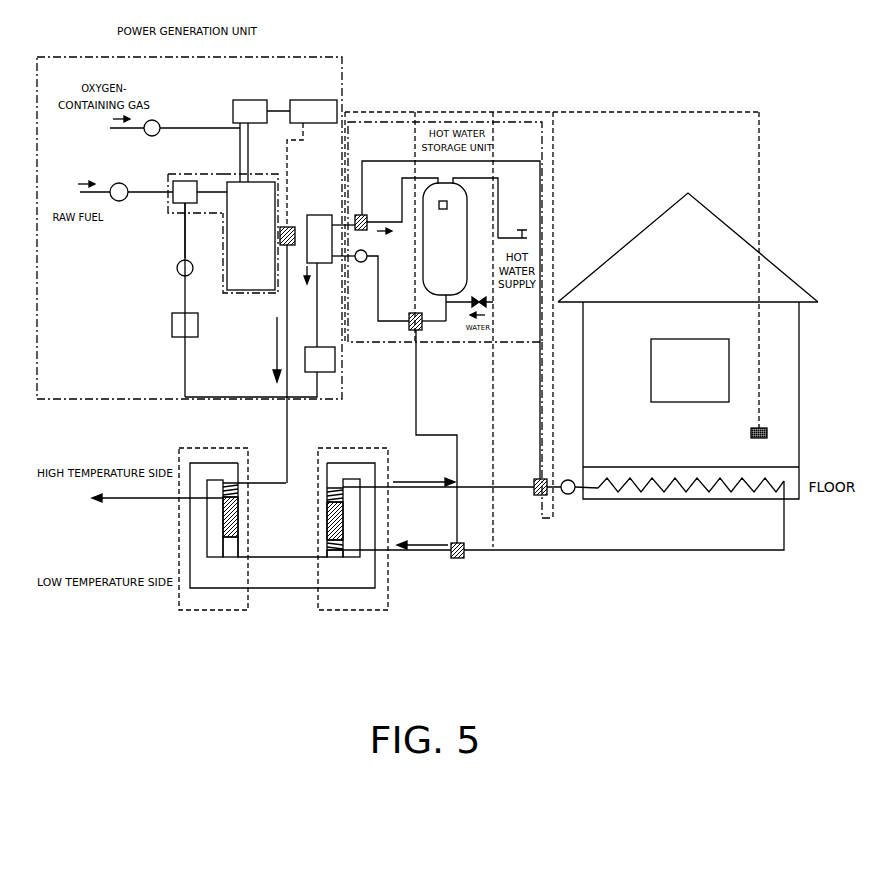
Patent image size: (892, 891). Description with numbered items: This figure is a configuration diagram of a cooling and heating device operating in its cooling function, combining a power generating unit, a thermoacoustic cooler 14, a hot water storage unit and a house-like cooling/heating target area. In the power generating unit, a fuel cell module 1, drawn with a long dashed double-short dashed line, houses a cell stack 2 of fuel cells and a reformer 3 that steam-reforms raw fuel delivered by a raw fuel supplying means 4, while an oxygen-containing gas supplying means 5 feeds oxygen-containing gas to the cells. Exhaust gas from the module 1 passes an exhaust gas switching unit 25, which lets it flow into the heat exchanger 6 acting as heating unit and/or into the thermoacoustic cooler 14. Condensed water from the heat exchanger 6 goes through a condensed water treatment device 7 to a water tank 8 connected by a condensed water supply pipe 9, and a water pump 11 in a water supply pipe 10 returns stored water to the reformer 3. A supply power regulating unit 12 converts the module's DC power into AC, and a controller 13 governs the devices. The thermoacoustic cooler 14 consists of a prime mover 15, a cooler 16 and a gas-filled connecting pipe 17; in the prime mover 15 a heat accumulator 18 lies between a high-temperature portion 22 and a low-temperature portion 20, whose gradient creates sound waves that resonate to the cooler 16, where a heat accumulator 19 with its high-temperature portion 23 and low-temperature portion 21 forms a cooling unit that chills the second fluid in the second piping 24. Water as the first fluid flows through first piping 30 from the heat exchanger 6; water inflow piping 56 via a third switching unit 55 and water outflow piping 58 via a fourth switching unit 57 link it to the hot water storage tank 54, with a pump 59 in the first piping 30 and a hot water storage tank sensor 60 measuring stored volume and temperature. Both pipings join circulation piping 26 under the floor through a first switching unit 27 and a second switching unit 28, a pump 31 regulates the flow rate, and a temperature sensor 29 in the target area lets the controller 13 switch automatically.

The fuel cell module 1 is at (226, 293).
The cell stack 2 is at (248, 282).
The reformer 3 is at (192, 196).
The raw fuel supplying means 4 is at (119, 201).
The oxygen-containing gas supplying means 5 is at (158, 120).
The heat exchanger 6 is at (320, 263).
The condensed water treatment device 7 is at (335, 356).
The water tank 8 is at (172, 327).
The condensed water supply pipe 9 is at (185, 370).
The water supply pipe 10 is at (183, 252).
The water pump 11 is at (177, 268).
The supply power regulating unit 12 is at (240, 112).
The controller 13 is at (323, 110).
The thermoacoustic cooler 14 is at (500, 391).
The prime mover 15 is at (213, 529).
The cooler 16 is at (353, 529).
The connecting pipe 17 is at (293, 580).
The heat accumulator 18 is at (237, 528).
The heat accumulator 19 is at (327, 518).
The low-temperature portion 20 is at (232, 557).
The low-temperature portion 21 is at (335, 558).
The high-temperature portion 22 is at (230, 478).
The high-temperature portion 23 is at (337, 478).
The second piping 24 is at (327, 545).
The exhaust gas switching unit 25 is at (294, 224).
The circulation piping 26 is at (580, 551).
The first switching unit 27 is at (538, 497).
The second switching unit 28 is at (462, 558).
The temperature sensor 29 is at (767, 433).
The first piping 30 is at (378, 278).
The pump 31 is at (570, 494).
The hot water storage tank 54 is at (466, 225).
The third switching unit 55 is at (366, 215).
The water inflow piping 56 is at (401, 196).
The fourth switching unit 57 is at (422, 326).
The water outflow piping 58 is at (433, 321).
The pump 59 is at (361, 262).
The hot water storage tank sensor 60 is at (447, 205).